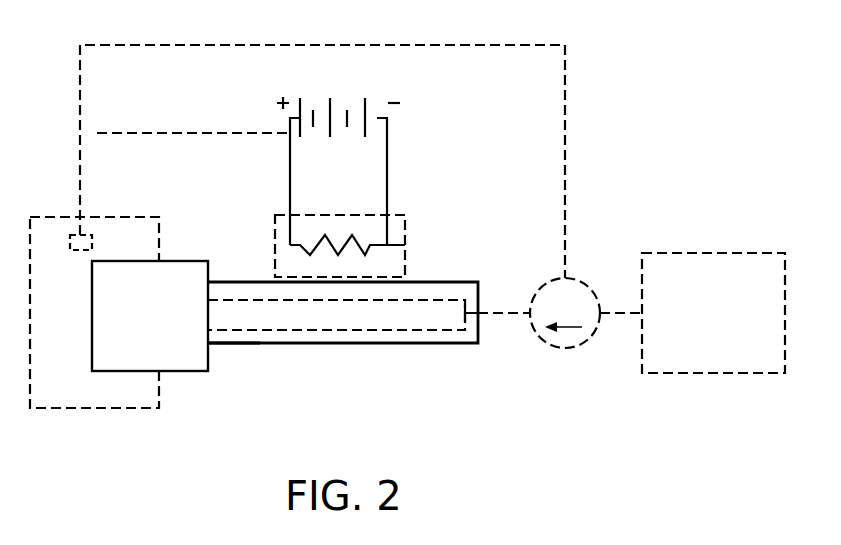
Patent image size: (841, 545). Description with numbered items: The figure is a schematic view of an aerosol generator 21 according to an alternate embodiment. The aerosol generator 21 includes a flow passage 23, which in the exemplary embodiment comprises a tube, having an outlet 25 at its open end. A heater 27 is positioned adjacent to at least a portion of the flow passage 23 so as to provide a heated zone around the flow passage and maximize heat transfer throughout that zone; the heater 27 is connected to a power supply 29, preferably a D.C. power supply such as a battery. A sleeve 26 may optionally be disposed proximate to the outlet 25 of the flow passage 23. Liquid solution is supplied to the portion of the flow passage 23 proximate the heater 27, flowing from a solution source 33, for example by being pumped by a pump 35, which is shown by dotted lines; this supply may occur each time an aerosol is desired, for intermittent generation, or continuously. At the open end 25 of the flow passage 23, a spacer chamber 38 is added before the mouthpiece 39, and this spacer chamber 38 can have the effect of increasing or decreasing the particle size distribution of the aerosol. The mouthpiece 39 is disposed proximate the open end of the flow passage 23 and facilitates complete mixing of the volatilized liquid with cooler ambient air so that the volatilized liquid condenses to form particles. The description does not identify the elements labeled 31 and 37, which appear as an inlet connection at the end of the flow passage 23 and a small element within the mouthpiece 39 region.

The aerosol generator 21 is at (299, 358).
The flow passage 23 is at (401, 333).
The outlet 25 is at (208, 297).
The sleeve 26 is at (228, 345).
The heater 27 is at (408, 244).
The power supply 29 is at (377, 94).
The inlet 31 is at (480, 333).
The solution source 33 is at (685, 375).
The pump 35 is at (568, 350).
The switch / sensor 37 is at (80, 251).
The spacer chamber 38 is at (183, 372).
The mouthpiece 39 is at (52, 216).